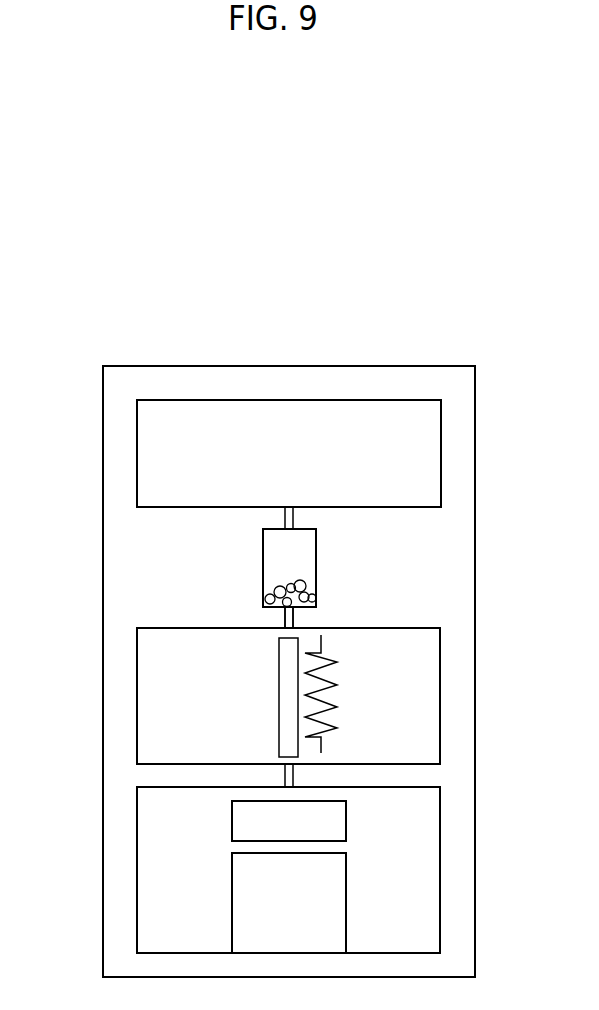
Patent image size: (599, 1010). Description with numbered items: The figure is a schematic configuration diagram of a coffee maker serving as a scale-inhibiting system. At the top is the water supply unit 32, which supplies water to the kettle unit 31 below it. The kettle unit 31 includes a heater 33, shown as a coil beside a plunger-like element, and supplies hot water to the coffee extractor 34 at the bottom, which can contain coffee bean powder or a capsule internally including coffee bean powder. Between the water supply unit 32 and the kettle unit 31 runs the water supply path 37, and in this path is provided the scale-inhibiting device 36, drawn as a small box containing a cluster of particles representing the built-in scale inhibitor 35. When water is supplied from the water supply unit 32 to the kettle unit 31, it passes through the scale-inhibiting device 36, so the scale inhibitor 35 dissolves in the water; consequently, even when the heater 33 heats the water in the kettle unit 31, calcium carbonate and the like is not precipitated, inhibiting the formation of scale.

The kettle unit 31 is at (423, 753).
The water supply unit 32 is at (423, 460).
The heater 33 is at (333, 680).
The coffee extractor 34 is at (329, 830).
The scale inhibitor 35 is at (310, 577).
The scale-inhibiting device 36 is at (273, 561).
The water supply path 37 is at (287, 620).